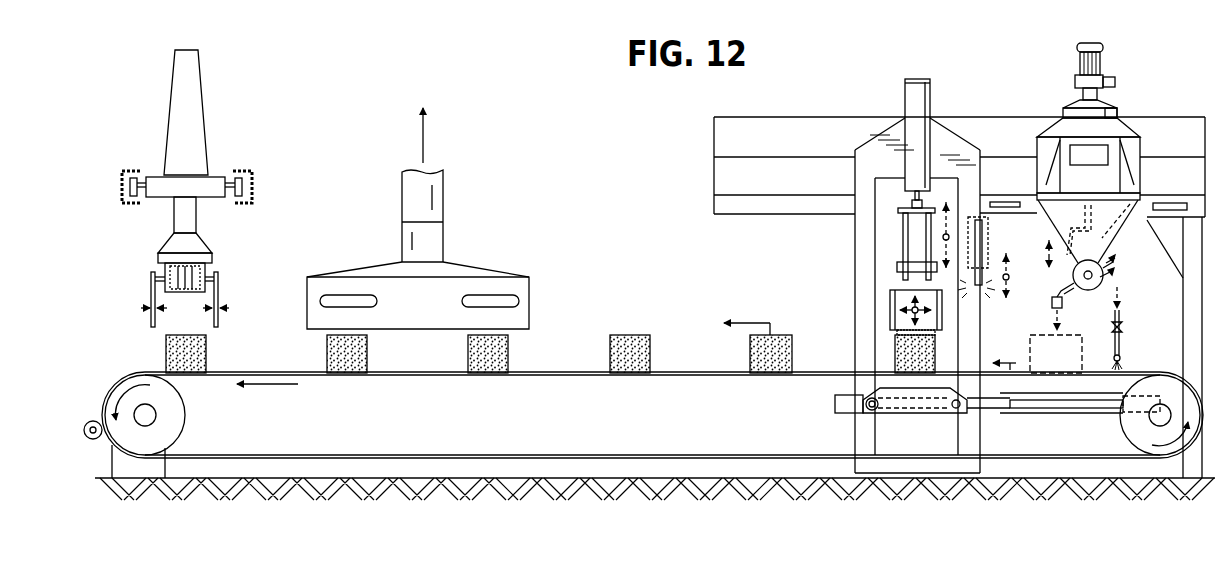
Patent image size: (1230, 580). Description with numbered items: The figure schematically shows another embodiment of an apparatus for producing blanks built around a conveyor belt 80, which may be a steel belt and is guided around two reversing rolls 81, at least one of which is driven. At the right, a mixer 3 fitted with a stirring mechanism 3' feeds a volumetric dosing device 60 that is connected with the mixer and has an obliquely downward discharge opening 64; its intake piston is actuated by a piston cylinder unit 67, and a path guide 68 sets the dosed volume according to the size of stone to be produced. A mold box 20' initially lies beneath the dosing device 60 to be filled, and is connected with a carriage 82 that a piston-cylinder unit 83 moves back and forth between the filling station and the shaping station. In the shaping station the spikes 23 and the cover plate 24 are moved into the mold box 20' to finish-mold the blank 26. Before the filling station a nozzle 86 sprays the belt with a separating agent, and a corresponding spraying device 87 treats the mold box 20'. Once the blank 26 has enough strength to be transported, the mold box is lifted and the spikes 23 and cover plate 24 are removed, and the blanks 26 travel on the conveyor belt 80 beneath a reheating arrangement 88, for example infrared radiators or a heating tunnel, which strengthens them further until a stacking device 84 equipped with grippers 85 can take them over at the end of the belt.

The mixer 3 is at (1088, 231).
The stirring mechanism 3' is at (1106, 229).
The mold box 20' is at (954, 329).
The spikes 23 is at (904, 234).
The cover plate 24 is at (897, 268).
The blank 26 is at (172, 353).
The volumetric dosing device 60 is at (1093, 284).
The discharge opening 64 is at (1061, 290).
The piston cylinder unit 67 is at (1115, 261).
The path guide 68 is at (1110, 273).
The conveyor belt 80 is at (698, 378).
The reversing rolls 81 is at (177, 415).
The carriage 82 is at (897, 413).
The piston-cylinder unit 83 is at (1037, 413).
The stacking device 84 is at (221, 247).
The grippers 85 is at (150, 323).
The nozzle 86 is at (1122, 358).
The spraying device 87 is at (980, 291).
The reheating arrangement 88 is at (478, 270).